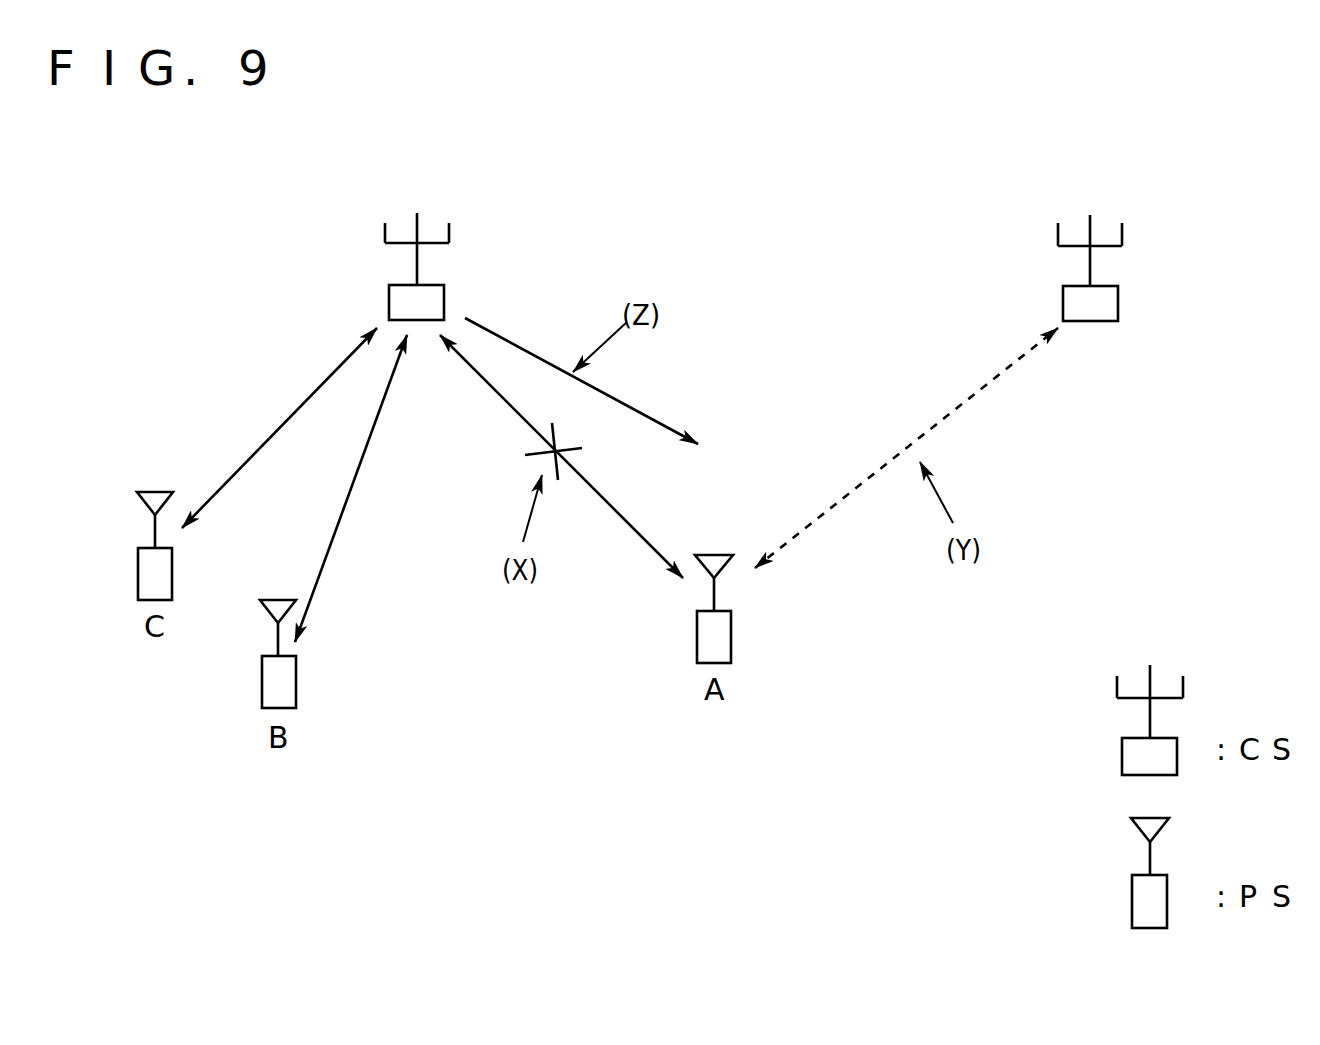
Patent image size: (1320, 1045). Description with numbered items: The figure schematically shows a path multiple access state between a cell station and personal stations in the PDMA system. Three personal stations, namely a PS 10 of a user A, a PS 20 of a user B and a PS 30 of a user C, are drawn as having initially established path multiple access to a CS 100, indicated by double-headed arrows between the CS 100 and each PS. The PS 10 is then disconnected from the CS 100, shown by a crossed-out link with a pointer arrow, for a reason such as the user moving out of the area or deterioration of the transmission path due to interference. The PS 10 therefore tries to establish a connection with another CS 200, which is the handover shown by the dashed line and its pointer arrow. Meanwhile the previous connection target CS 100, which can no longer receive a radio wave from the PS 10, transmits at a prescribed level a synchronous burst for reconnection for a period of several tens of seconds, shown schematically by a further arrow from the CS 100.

The CS 100 is at (444, 292).
The CS 200 is at (1118, 297).
The PS 10 is at (731, 634).
The PS 20 is at (296, 683).
The PS 30 is at (172, 568).